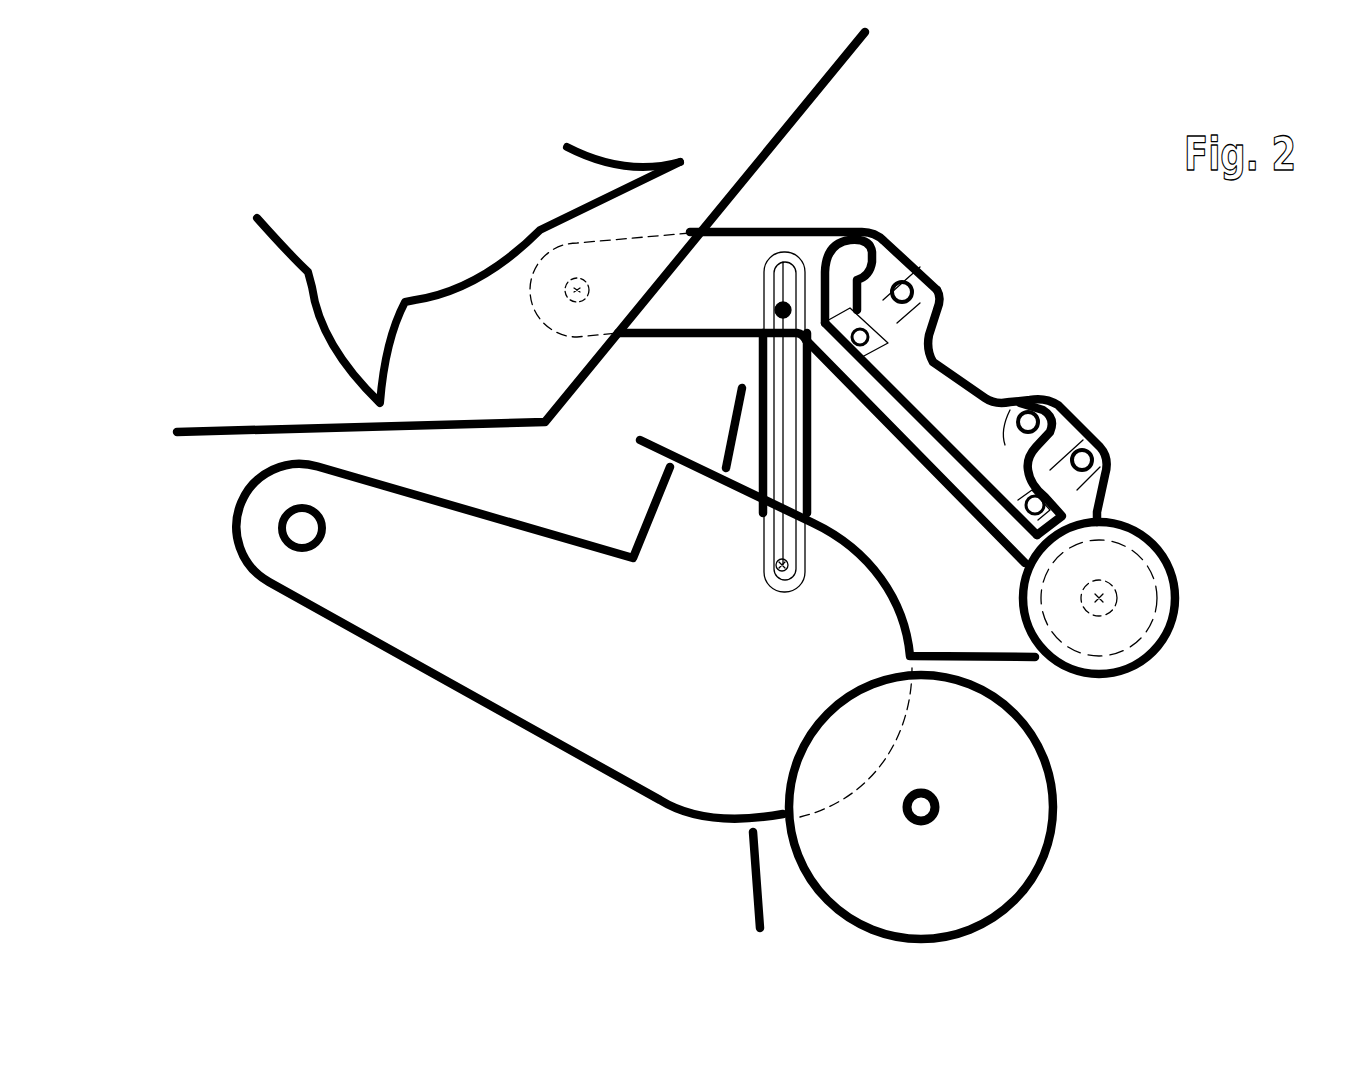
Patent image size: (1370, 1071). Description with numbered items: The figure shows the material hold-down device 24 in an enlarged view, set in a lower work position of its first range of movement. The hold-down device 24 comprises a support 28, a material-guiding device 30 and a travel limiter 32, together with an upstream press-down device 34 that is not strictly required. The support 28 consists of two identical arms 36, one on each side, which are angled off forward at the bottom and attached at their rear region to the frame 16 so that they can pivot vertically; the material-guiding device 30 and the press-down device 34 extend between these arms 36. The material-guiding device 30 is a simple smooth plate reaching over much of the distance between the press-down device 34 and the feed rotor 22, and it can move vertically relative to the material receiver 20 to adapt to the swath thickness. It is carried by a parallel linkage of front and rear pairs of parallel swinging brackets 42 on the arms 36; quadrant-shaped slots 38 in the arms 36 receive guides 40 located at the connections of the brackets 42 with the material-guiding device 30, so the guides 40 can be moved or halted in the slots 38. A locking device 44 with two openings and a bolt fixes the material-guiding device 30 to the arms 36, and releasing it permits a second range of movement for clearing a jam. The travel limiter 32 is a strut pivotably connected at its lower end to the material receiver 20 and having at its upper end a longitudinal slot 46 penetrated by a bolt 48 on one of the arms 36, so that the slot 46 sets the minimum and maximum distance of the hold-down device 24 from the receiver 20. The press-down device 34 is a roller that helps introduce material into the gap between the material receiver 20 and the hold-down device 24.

The frame 16 is at (185, 442).
The material receiver 20 is at (525, 730).
The feed rotor 22 is at (273, 253).
The material hold-down device 24 is at (1042, 258).
The support 28 is at (1113, 480).
The material-guiding device 30 is at (930, 373).
The travel limiter 32 is at (813, 487).
The press-down device 34 is at (1183, 610).
The arms 36 is at (690, 240).
The slots 38 is at (845, 245).
The guides 40 is at (855, 365).
The swinging brackets 42 is at (883, 298).
The locking device 44 is at (1027, 400).
The longitudinal slot 46 is at (777, 270).
The bolt 48 is at (777, 307).